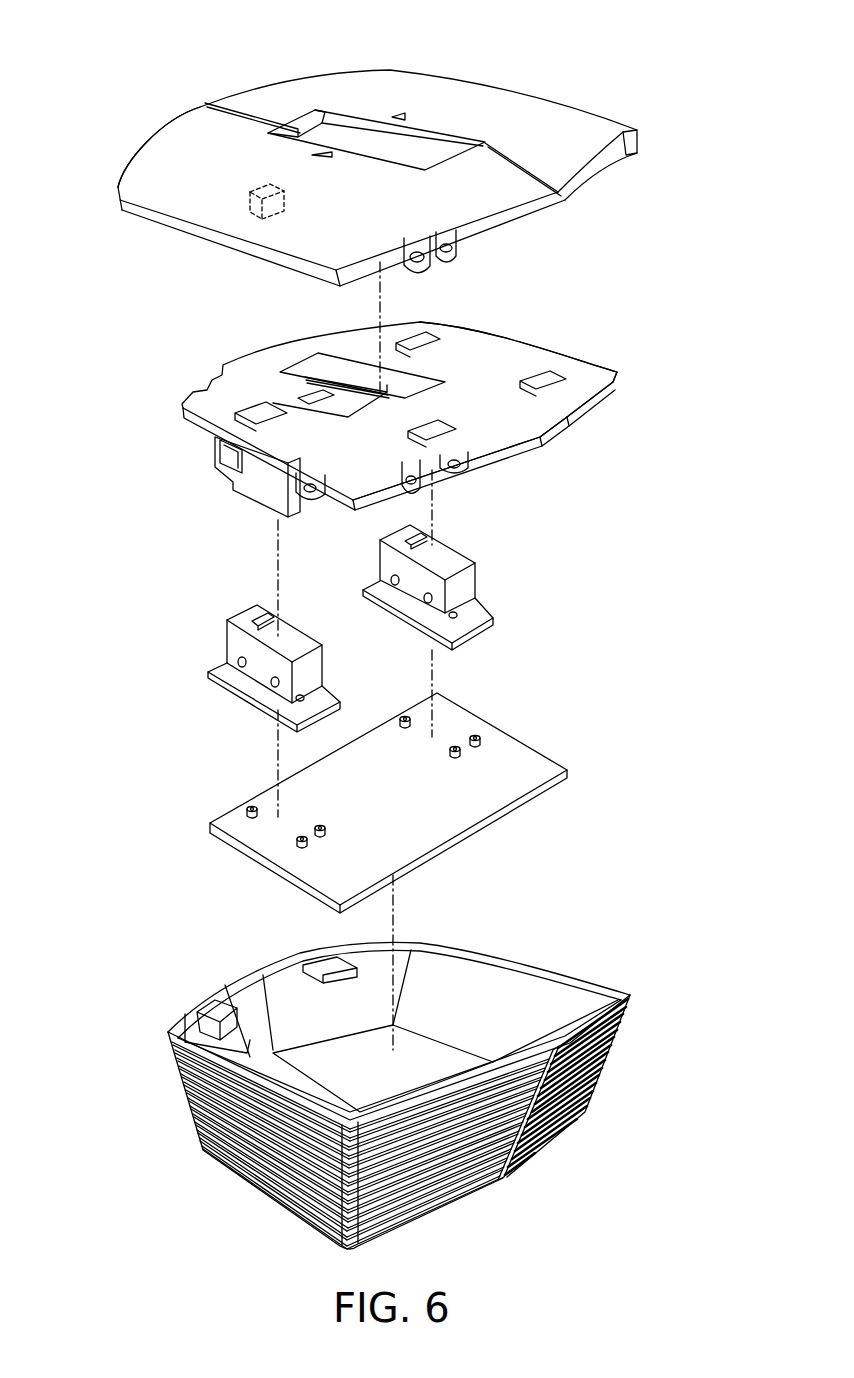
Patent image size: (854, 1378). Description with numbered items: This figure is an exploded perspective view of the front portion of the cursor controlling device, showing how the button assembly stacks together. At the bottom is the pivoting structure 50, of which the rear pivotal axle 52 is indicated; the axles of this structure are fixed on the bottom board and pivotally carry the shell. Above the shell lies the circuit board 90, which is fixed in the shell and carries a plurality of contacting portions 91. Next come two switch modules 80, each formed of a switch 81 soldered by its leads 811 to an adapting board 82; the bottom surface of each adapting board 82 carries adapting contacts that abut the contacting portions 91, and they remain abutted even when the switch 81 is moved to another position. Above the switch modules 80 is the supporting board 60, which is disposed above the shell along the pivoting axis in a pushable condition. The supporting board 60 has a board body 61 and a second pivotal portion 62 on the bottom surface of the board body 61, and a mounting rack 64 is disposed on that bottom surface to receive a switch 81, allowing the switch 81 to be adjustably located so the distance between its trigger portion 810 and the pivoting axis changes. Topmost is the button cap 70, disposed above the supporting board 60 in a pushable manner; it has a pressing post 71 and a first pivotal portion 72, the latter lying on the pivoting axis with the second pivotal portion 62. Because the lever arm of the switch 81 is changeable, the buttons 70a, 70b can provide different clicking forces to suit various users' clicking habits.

The pivoting structure 50 is at (457, 1095).
The rear pivotal axle 52 is at (612, 1067).
The supporting board 60 is at (386, 408).
The board body 61 is at (495, 357).
The second pivotal portion 62 is at (455, 476).
The mounting rack 64 is at (262, 488).
The button cap 70 is at (341, 206).
The button 70a is at (155, 178).
The button 70b is at (327, 100).
The pressing post 71 is at (265, 208).
The first pivotal portion 72 is at (460, 247).
The switch module 80 is at (358, 632).
The switch 81 is at (233, 642).
The trigger portion 810 is at (258, 622).
The leads 811 is at (303, 698).
The adapting board 82 is at (255, 703).
The circuit board 90 is at (381, 794).
The contacting portions 91 is at (302, 843).